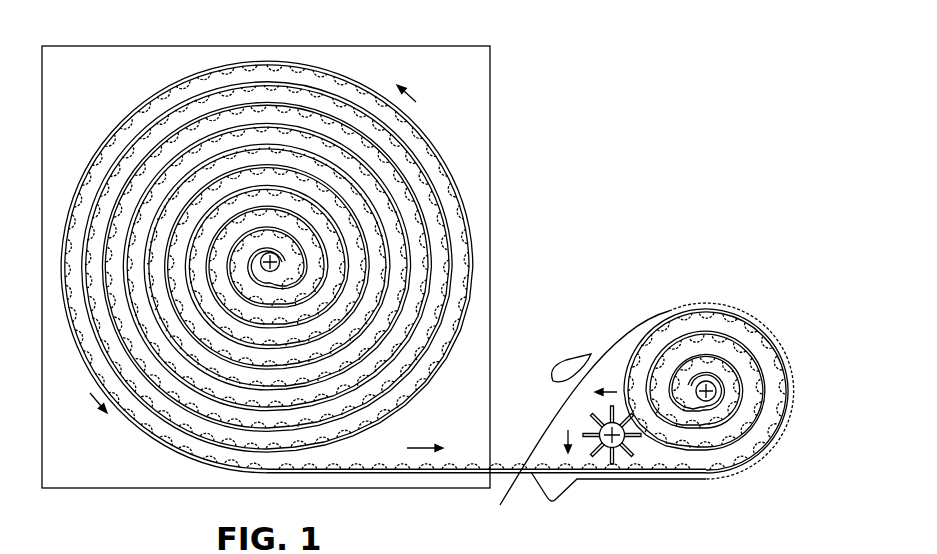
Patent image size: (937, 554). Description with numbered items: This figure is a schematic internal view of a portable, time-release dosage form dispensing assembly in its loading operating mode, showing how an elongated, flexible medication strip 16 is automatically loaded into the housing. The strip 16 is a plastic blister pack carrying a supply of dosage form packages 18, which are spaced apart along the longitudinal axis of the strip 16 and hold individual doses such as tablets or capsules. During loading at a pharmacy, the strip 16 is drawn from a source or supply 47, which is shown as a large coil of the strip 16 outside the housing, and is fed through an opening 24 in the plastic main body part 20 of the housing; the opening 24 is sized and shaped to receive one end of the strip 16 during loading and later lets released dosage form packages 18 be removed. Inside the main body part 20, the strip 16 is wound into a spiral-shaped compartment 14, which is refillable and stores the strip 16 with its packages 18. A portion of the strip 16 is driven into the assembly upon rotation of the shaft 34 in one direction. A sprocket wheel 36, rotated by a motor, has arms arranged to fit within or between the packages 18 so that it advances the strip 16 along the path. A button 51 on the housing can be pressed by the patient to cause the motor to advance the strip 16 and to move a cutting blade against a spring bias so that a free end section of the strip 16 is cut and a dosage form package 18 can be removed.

The spiral-shaped compartment 14 is at (750, 345).
The medication strip 16 is at (747, 474).
The dosage form packages 18 is at (216, 464).
The main body part 20 is at (682, 304).
The opening 24 is at (522, 471).
The shaft 34 is at (615, 440).
The sprocket wheel 36 is at (641, 462).
The source or supply 47 is at (467, 46).
The button 51 is at (569, 357).